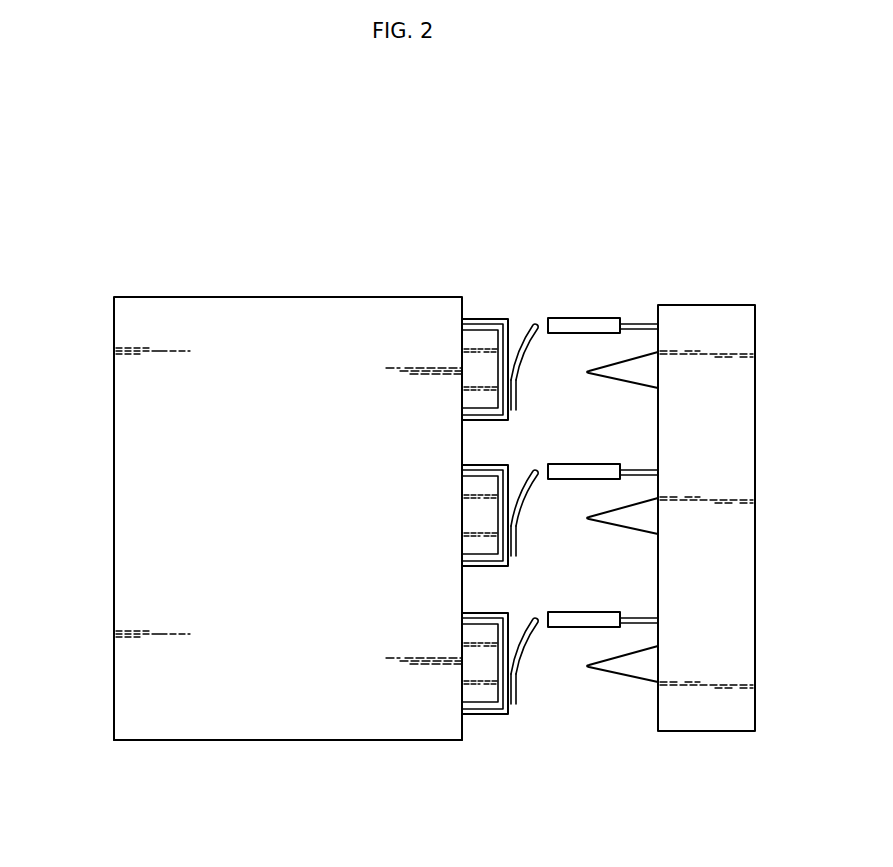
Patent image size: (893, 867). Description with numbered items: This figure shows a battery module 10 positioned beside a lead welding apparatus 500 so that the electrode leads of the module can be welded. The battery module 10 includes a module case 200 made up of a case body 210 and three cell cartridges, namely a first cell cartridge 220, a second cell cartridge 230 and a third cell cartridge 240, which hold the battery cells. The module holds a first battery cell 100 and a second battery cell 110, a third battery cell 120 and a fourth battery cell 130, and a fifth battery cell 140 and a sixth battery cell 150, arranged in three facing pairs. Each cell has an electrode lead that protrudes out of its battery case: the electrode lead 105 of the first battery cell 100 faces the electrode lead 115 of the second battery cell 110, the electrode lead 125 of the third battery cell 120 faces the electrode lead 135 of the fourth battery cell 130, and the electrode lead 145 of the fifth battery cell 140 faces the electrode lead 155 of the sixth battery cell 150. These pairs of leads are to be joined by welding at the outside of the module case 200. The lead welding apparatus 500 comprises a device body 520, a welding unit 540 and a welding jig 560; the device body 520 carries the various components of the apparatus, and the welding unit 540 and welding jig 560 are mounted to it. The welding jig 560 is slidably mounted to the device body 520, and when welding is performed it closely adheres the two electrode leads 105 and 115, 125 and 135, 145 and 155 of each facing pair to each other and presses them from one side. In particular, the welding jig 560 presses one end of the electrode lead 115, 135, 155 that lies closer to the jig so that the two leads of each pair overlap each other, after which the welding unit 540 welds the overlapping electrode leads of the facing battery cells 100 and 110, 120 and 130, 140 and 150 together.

The battery module 10 is at (84, 272).
The first battery cell 100 is at (497, 317).
The electrode lead 105 is at (506, 366).
The second battery cell 110 is at (518, 410).
The electrode lead 115 is at (513, 390).
The third battery cell 120 is at (494, 492).
The electrode lead 125 is at (536, 513).
The fourth battery cell 130 is at (527, 520).
The electrode lead 135 is at (539, 538).
The fifth battery cell 140 is at (494, 640).
The electrode lead 145 is at (536, 661).
The sixth battery cell 150 is at (527, 668).
The electrode lead 155 is at (539, 686).
The module case 200 is at (271, 755).
The case body 210 is at (358, 741).
The first cell cartridge 220 is at (478, 400).
The second cell cartridge 230 is at (447, 518).
The third cell cartridge 240 is at (447, 666).
The lead welding apparatus 500 is at (702, 253).
The device body 520 is at (727, 305).
The welding unit 540 is at (632, 380).
The welding jig 560 is at (594, 317).